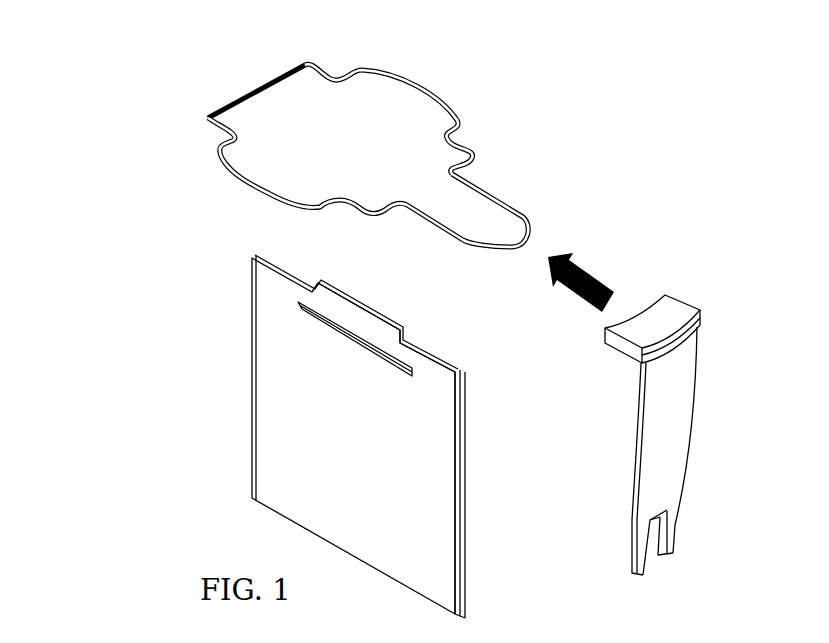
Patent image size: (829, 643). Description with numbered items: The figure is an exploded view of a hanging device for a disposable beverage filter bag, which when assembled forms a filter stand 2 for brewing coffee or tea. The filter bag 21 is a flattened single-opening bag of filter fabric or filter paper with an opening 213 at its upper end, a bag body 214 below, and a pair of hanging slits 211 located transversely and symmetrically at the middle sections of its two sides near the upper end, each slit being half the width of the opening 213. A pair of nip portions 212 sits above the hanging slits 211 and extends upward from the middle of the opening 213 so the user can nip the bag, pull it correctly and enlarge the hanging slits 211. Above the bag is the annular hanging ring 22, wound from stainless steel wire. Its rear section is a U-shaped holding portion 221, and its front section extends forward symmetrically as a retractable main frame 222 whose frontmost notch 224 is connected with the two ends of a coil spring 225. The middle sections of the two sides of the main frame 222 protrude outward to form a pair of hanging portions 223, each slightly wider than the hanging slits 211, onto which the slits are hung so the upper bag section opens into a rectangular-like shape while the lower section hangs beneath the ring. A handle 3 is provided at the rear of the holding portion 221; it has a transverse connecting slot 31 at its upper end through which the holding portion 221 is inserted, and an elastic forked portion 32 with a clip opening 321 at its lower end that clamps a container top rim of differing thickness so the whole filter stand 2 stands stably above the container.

The filter stand 2 is at (326, 321).
The filter bag 21 is at (331, 435).
The hanging slits 211 is at (344, 369).
The nip portions 212 is at (367, 305).
The opening 213 is at (435, 360).
The bag body 214 is at (295, 436).
The hanging ring 22 is at (487, 115).
The holding portion 221 is at (485, 193).
The main frame 222 is at (190, 208).
The hanging portions 223 is at (433, 93).
The notch 224 is at (166, 105).
The coil spring 225 is at (223, 71).
The handle 3 is at (662, 432).
The connecting slot 31 is at (695, 327).
The forked portion 32 is at (670, 537).
The clip opening 321 is at (652, 558).